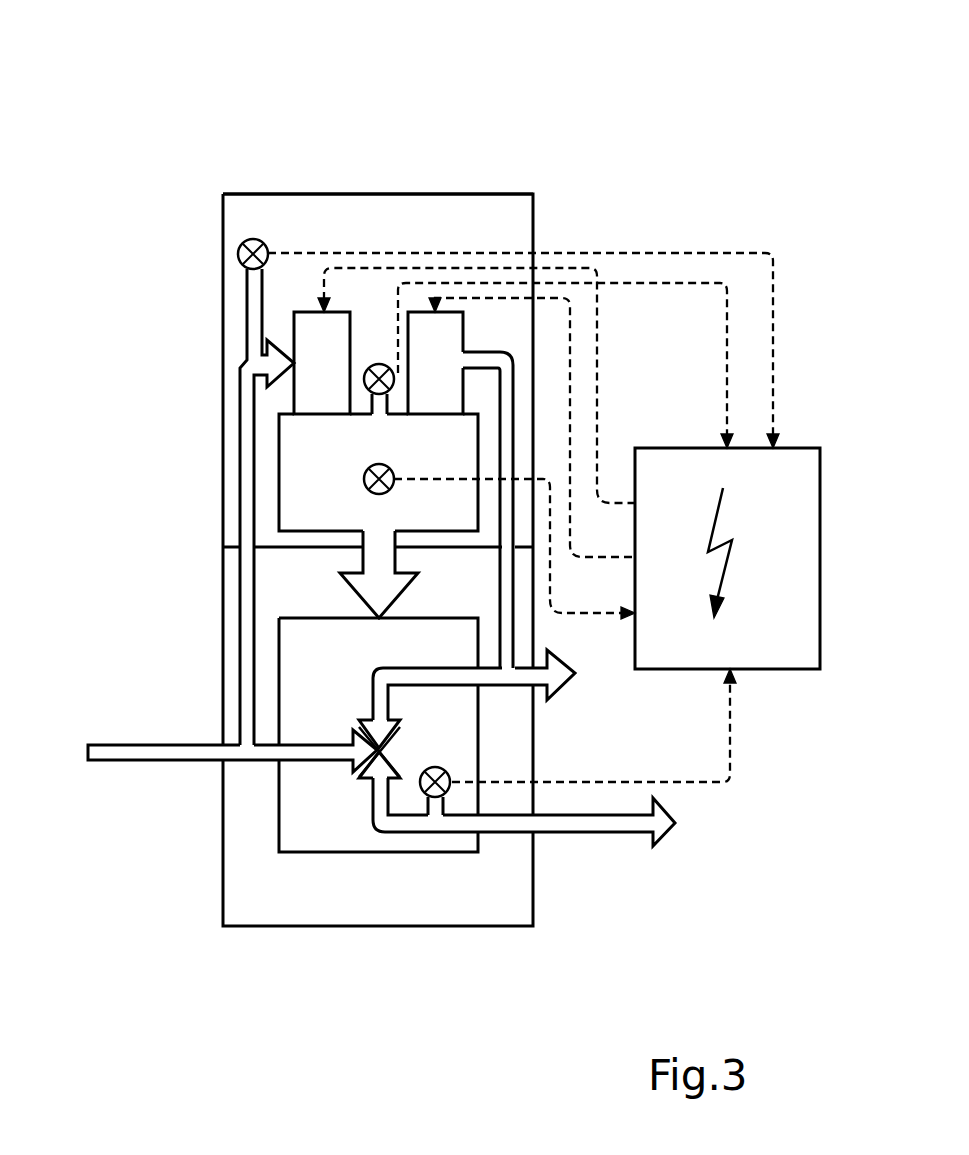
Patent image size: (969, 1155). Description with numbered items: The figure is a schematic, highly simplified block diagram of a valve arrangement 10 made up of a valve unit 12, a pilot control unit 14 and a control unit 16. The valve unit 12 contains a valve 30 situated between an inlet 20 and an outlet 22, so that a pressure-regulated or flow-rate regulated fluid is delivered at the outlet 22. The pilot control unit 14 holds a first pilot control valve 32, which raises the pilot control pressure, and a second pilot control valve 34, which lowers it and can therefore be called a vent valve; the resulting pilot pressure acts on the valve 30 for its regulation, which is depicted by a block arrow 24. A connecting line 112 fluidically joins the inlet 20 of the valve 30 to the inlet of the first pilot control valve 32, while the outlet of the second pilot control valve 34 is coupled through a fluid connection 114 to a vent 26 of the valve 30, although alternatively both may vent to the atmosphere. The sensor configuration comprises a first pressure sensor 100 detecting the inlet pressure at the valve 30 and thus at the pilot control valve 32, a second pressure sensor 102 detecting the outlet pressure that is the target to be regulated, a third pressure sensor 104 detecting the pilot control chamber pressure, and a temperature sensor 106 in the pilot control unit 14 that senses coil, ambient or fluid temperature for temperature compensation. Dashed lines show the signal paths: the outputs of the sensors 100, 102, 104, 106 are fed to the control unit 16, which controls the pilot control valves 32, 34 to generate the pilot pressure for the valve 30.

The valve arrangement 10 is at (645, 163).
The valve unit 12 is at (534, 892).
The pilot control unit 14 is at (410, 193).
The control unit 16 is at (787, 669).
The inlet 20 is at (136, 750).
The outlet 22 is at (617, 823).
The block arrow 24 is at (380, 559).
The vent 26 is at (520, 675).
The valve 30 is at (347, 855).
The first pilot control valve 32 is at (305, 311).
The second pilot control valve 34 is at (458, 311).
The first pressure sensor 100 is at (244, 245).
The second pressure sensor 102 is at (420, 790).
The third pressure sensor 104 is at (367, 366).
The temperature sensor 106 is at (364, 479).
The connecting line 112 is at (243, 458).
The fluid connection 114 is at (507, 392).